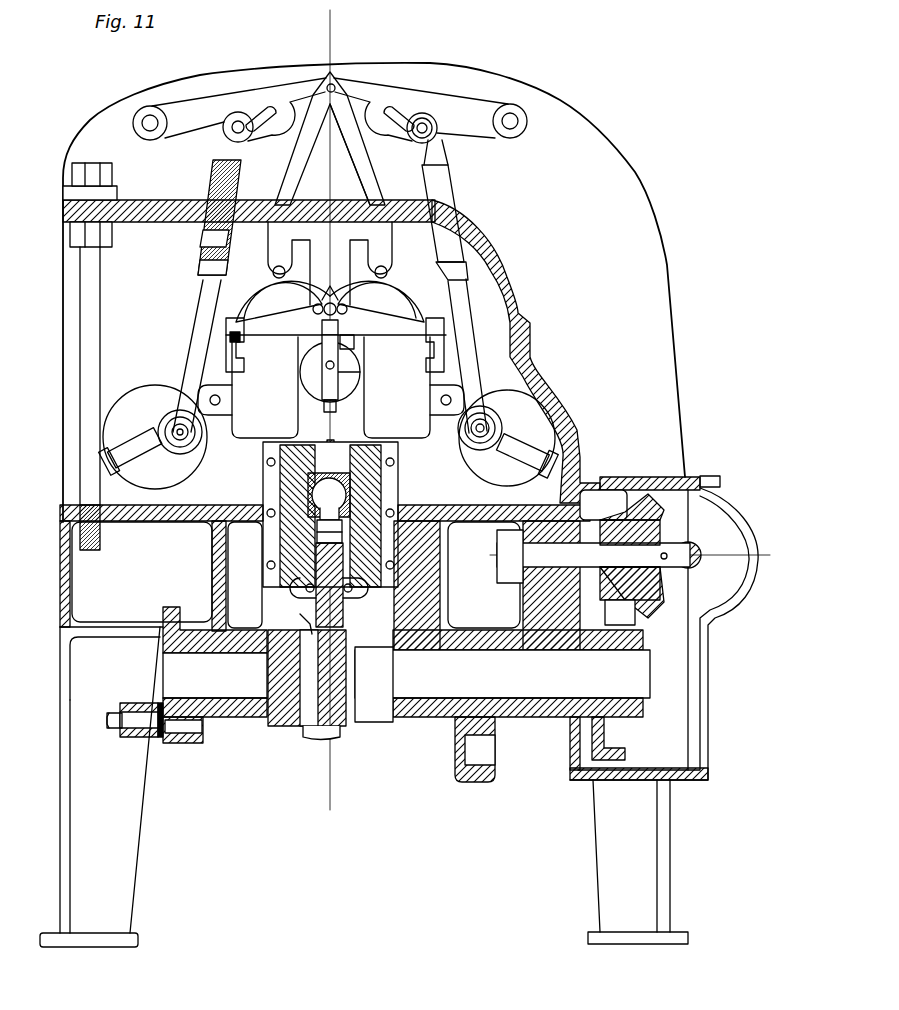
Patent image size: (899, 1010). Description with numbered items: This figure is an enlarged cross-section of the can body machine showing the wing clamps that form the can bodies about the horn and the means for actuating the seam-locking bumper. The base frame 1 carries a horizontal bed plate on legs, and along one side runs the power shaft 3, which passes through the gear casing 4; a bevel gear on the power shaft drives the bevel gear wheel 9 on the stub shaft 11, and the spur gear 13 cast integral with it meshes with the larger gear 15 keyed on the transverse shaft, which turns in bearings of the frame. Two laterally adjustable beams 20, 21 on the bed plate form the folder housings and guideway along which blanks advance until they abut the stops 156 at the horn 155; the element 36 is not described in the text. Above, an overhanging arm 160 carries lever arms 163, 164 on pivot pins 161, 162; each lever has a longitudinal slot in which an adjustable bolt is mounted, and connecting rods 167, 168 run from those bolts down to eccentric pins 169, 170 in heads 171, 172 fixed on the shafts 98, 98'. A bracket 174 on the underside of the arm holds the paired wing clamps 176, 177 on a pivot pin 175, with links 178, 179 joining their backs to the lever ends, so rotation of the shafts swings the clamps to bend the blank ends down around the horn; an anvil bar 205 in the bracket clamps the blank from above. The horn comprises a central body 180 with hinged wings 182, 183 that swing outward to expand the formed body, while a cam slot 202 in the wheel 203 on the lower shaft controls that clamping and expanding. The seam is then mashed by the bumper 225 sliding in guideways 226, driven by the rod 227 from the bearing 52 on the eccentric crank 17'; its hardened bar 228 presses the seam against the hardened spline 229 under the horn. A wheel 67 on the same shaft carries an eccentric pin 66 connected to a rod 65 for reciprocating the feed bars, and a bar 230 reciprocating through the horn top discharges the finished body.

The base frame 1 is at (180, 513).
The power shaft 3 is at (700, 552).
The gear casing 4 is at (740, 602).
The bevel gear wheel 9 is at (662, 485).
The stub shaft 11 is at (720, 484).
The spur gear 13 is at (605, 520).
The gear 15 is at (658, 625).
The eccentric crank 17' is at (307, 707).
The beam 20 is at (415, 456).
The beam 21 is at (235, 452).
The plate 36 is at (360, 343).
The bearing 52 is at (300, 625).
The rod 65 is at (133, 703).
The eccentric pin 66 is at (140, 725).
The wheel 67 is at (178, 744).
The shaft 98 is at (102, 436).
The shaft 98' is at (558, 439).
The horn 155 is at (305, 342).
The stops 156 is at (222, 352).
The overhanging arm 160 is at (200, 205).
The pivot pin 161 is at (150, 120).
The pivot pin 162 is at (522, 118).
The lever arm 163 is at (225, 100).
The lever arm 164 is at (460, 103).
The connecting rod 167 is at (468, 300).
The connecting rod 168 is at (200, 306).
The eccentric pin 169 is at (168, 414).
The eccentric pin 170 is at (498, 424).
The head 171 is at (128, 468).
The head 172 is at (490, 462).
The bracket 174 is at (335, 265).
The pivot pin 175 is at (350, 313).
The wing clamp 176 is at (262, 290).
The wing clamp 177 is at (395, 300).
The link 178 is at (302, 160).
The link 179 is at (360, 165).
The central body 180 is at (314, 394).
The wing 182 is at (306, 376).
The wing 183 is at (352, 378).
The cam slot 202 is at (484, 755).
The wheel 203 is at (468, 782).
The anvil bar 205 is at (312, 314).
The bumper 225 is at (365, 477).
The guideways 226 is at (380, 530).
The rod 227 is at (350, 600).
The hardened bar 228 is at (335, 440).
The hardened spline 229 is at (318, 413).
The bar 230 is at (430, 350).